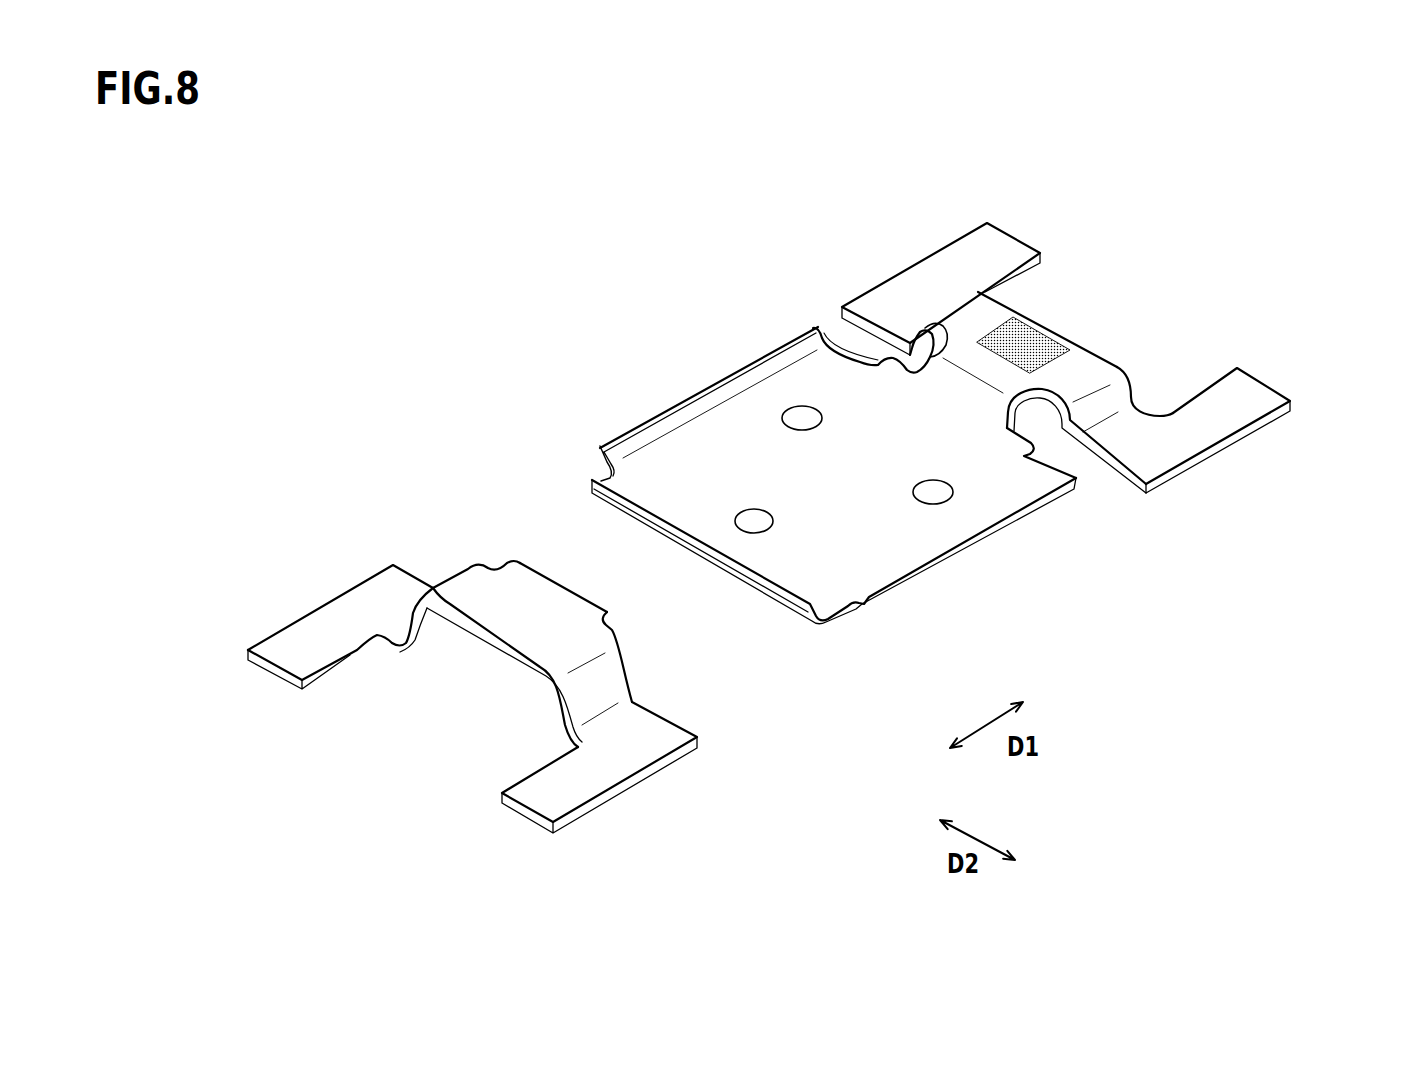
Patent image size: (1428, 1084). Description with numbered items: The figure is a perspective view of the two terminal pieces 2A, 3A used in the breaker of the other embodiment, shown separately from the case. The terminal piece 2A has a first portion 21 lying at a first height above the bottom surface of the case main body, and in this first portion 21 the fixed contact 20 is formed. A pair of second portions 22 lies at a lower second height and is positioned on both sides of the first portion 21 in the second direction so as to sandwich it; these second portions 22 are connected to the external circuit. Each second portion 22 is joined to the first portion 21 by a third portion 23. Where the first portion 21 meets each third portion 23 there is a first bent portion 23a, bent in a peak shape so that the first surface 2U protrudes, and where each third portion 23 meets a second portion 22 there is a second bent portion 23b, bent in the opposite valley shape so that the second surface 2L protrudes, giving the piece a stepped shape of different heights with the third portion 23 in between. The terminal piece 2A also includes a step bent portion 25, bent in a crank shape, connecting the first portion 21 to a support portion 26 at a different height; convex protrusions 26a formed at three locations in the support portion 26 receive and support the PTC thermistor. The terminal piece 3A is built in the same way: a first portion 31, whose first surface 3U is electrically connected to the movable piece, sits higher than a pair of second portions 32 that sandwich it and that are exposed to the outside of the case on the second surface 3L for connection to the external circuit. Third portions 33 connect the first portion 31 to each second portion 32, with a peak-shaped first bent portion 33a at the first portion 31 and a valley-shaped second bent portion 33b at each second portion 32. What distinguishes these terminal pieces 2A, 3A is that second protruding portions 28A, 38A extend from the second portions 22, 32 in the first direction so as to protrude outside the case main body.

The terminal piece 2A is at (1236, 218).
The first surface 2U is at (1044, 327).
The second surface 2L is at (1150, 455).
The fixed contact 20 is at (1020, 343).
The first portion 21 is at (1075, 368).
The second portions 22 is at (897, 307).
The third portions 23 is at (1120, 402).
The first bent portion 23a is at (1095, 387).
The second bent portion 23b is at (1107, 423).
The step bent portion 25 is at (962, 387).
The support portion 26 is at (802, 483).
The protrusions 26a is at (937, 493).
The second protruding portions 28A is at (987, 255).
The terminal piece 3A is at (446, 716).
The first surface 3U is at (541, 608).
The second surface 3L is at (607, 745).
The first portion 31 is at (520, 610).
The second portions 32 is at (380, 595).
The third portions 33 is at (605, 685).
The first bent portion 33a is at (571, 666).
The second bent portion 33b is at (605, 713).
The second protruding portions 38A is at (305, 650).